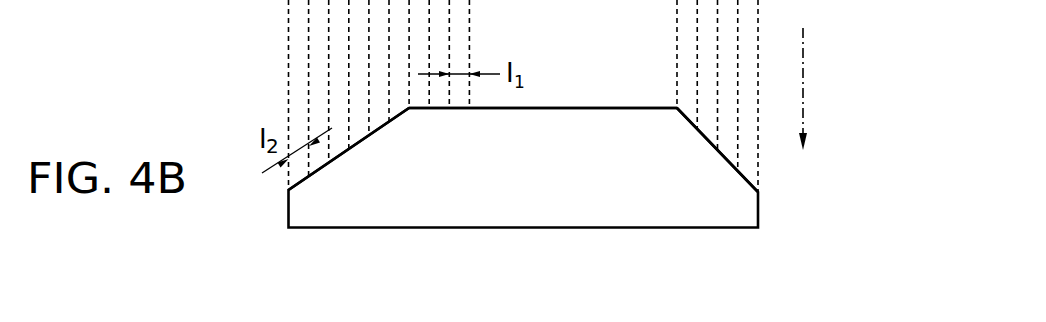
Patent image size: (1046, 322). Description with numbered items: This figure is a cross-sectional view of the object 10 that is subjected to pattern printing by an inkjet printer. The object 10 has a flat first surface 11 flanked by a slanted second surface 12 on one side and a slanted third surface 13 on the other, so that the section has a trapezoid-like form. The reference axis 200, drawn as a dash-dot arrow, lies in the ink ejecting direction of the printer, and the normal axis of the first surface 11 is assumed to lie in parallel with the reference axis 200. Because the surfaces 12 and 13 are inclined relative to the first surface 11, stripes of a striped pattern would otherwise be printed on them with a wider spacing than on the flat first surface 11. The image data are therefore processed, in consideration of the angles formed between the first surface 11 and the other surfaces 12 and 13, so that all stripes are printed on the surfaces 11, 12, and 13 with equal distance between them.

The object 10 is at (770, 225).
The first surface 11 is at (576, 109).
The second surface 12 is at (348, 150).
The third surface 13 is at (719, 157).
The reference axis 200 is at (803, 41).